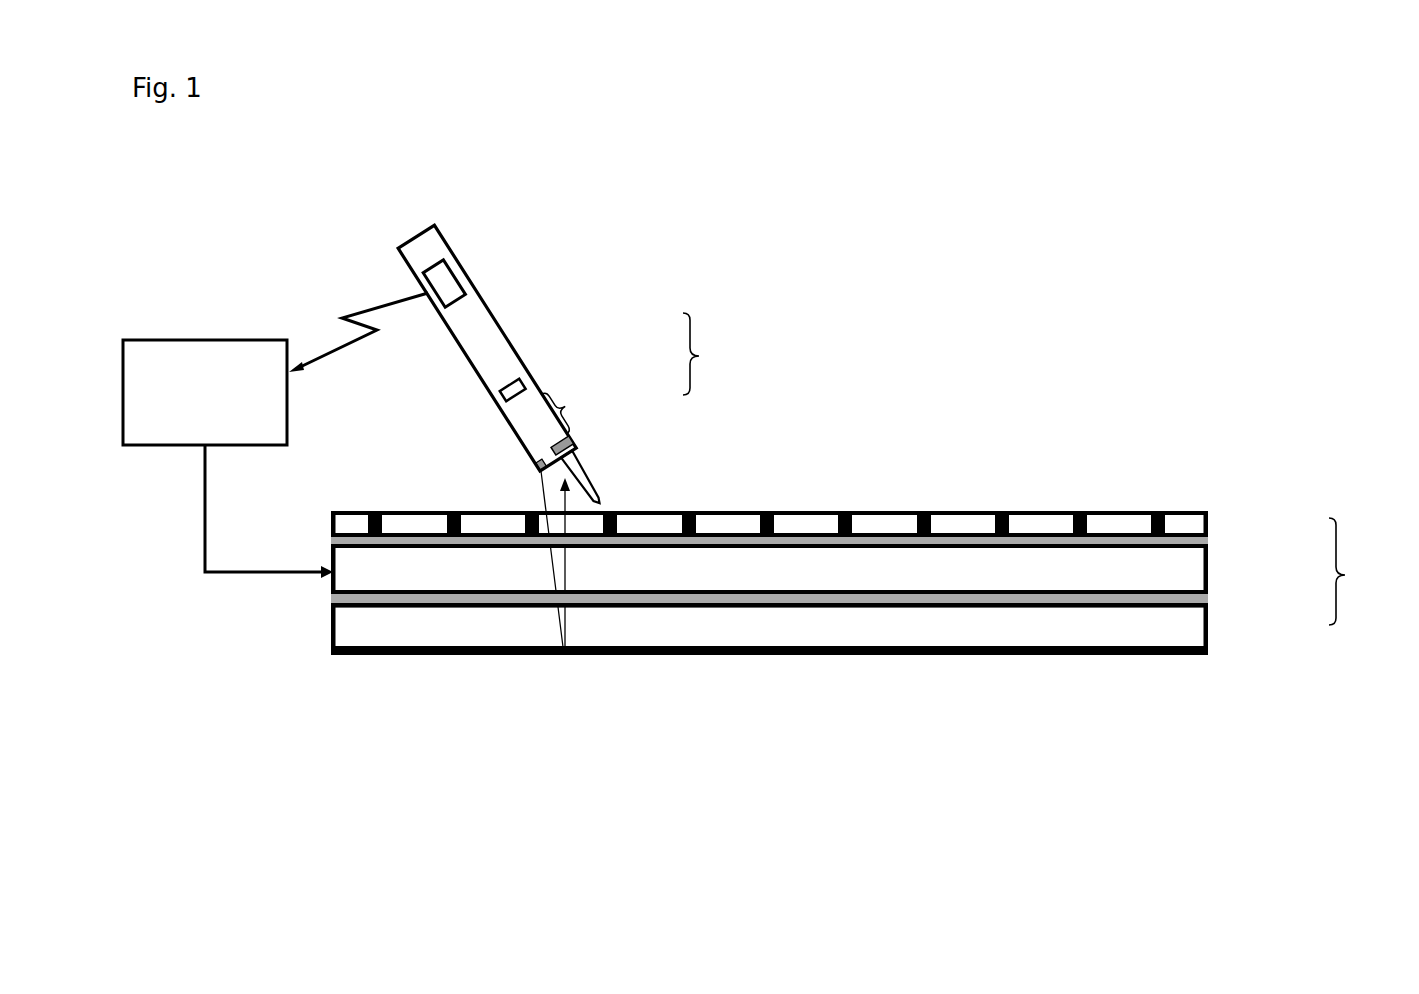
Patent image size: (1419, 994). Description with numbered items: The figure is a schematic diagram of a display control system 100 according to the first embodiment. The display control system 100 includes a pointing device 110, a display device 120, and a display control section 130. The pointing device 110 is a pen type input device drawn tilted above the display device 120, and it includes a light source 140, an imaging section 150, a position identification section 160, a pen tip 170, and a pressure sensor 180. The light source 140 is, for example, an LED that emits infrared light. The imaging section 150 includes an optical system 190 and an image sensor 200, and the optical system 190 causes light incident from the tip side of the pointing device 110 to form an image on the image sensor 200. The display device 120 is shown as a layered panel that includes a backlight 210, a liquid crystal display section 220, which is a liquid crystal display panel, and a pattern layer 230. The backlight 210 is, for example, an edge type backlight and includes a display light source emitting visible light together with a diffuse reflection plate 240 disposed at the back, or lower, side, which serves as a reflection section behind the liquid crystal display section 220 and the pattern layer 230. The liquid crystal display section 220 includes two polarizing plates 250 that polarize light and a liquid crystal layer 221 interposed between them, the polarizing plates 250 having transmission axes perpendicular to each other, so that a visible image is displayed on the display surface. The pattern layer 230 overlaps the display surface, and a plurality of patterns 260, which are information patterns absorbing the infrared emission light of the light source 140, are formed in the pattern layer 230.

The display control system 100 is at (885, 230).
The pointing device 110 is at (674, 192).
The display device 120 is at (880, 673).
The display control section 130 is at (183, 337).
The light source 140 is at (540, 467).
The imaging section 150 is at (720, 354).
The position identification section 160 is at (447, 282).
The pen tip 170 is at (588, 482).
The pressure sensor 180 is at (574, 447).
The optical system 190 is at (568, 403).
The image sensor 200 is at (520, 385).
The backlight 210 is at (1147, 627).
The liquid crystal display section 220 is at (1363, 571).
The liquid crystal layer 221 is at (1193, 573).
The pattern layer 230 is at (1193, 522).
The diffuse reflection plate 240 is at (1012, 654).
The polarizing plates 250 is at (1208, 538).
The patterns 260 is at (1162, 510).